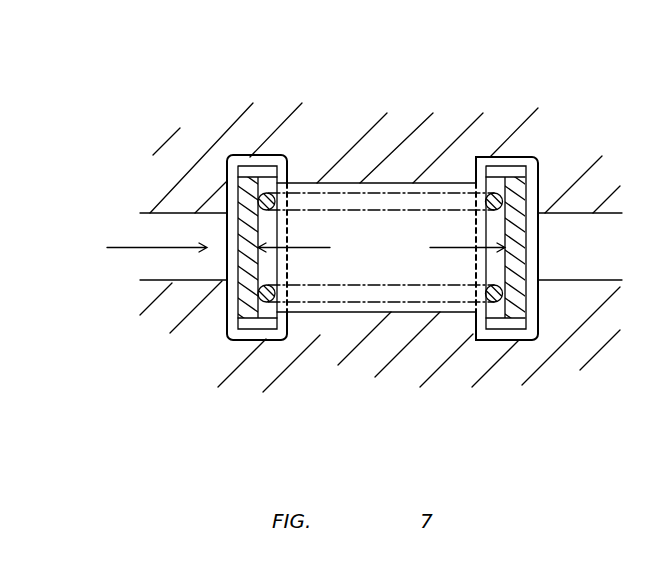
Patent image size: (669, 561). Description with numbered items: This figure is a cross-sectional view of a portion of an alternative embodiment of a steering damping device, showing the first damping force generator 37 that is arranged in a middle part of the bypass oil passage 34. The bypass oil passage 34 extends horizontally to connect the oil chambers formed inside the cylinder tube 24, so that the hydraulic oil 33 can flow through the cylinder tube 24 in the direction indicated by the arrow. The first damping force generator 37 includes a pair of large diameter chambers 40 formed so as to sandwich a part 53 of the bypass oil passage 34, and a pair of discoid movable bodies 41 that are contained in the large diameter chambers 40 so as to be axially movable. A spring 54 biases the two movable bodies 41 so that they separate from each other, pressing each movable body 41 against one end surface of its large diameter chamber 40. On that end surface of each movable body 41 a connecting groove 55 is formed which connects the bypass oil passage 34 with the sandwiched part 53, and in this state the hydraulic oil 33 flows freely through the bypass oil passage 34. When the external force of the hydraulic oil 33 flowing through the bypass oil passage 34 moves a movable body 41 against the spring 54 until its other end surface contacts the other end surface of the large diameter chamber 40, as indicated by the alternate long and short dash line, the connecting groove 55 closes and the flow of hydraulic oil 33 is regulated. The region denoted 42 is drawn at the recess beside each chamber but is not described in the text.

The cylinder tube 24 is at (447, 117).
The hydraulic oil 33 is at (127, 252).
The bypass oil passage 34 is at (150, 222).
The first damping force generator 37 is at (370, 118).
The large diameter chamber 40 is at (270, 340).
The movable body 41 is at (278, 336).
The recess 42 is at (212, 263).
The part of the bypass oil passage 53 is at (393, 256).
The spring 54 is at (381, 307).
The connecting groove 55 is at (227, 183).